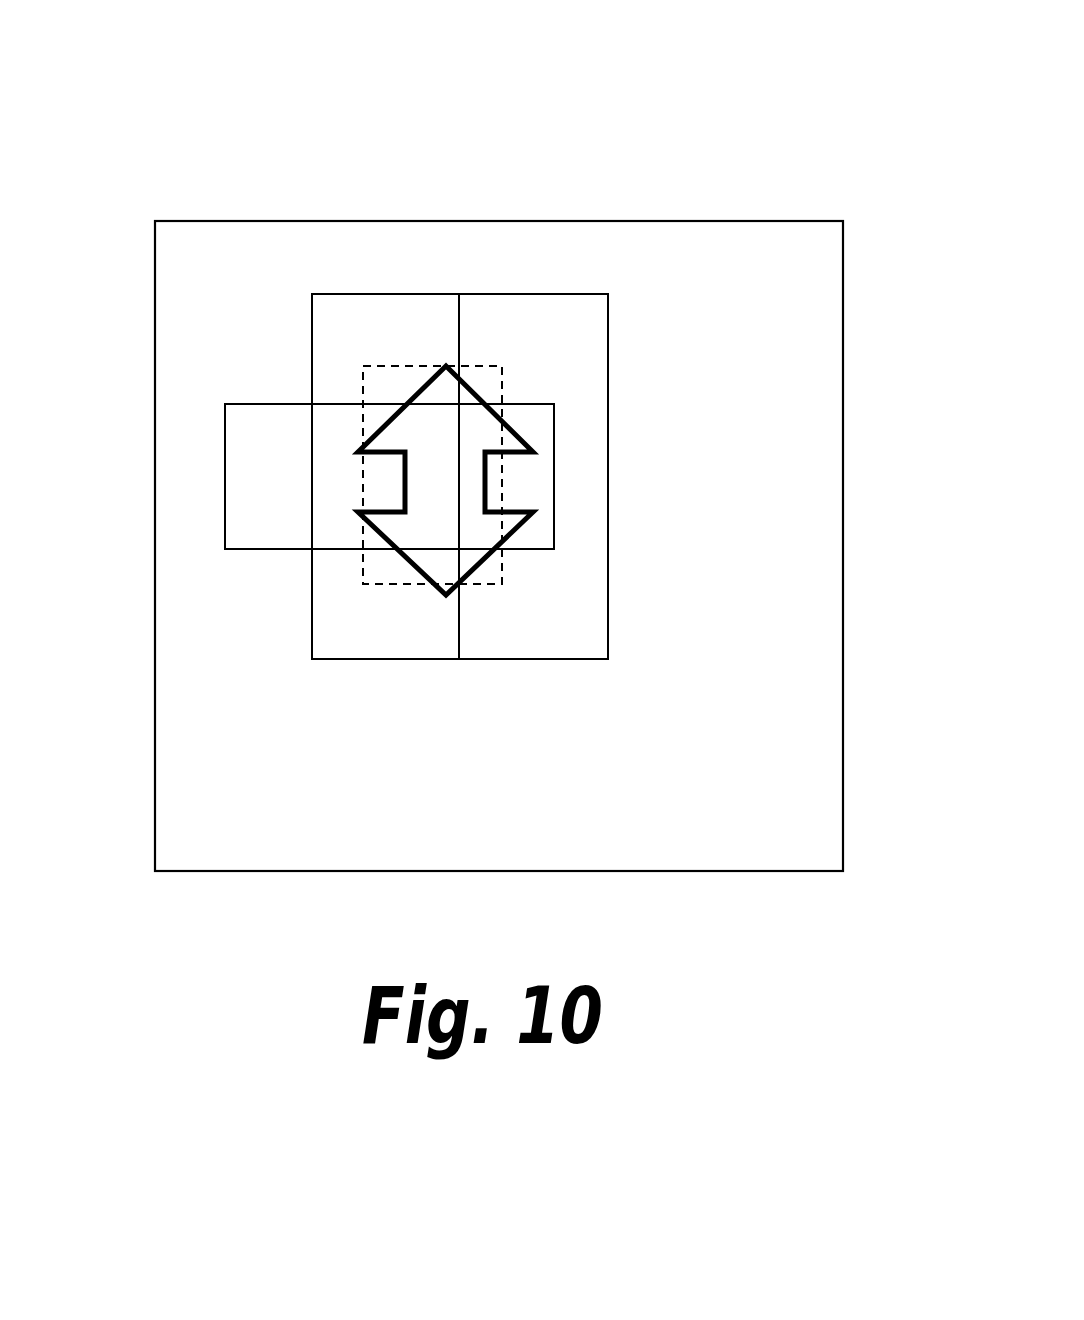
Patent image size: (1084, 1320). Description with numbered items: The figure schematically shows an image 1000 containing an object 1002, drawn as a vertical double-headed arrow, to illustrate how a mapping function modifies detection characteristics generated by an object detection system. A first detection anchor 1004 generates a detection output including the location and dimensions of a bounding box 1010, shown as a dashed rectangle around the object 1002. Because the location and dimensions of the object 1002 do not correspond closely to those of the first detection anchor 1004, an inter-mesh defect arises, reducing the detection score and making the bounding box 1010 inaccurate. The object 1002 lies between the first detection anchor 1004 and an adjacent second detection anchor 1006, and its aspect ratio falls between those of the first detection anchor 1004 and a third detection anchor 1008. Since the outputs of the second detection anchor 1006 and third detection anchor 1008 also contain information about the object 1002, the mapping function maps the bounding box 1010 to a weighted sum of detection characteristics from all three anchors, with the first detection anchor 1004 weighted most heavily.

The image 1000 is at (480, 70).
The object 1002 is at (480, 563).
The first detection anchor 1004 is at (388, 297).
The second detection anchor 1006 is at (525, 297).
The third detection anchor 1008 is at (295, 404).
The bounding box 1010 is at (385, 587).